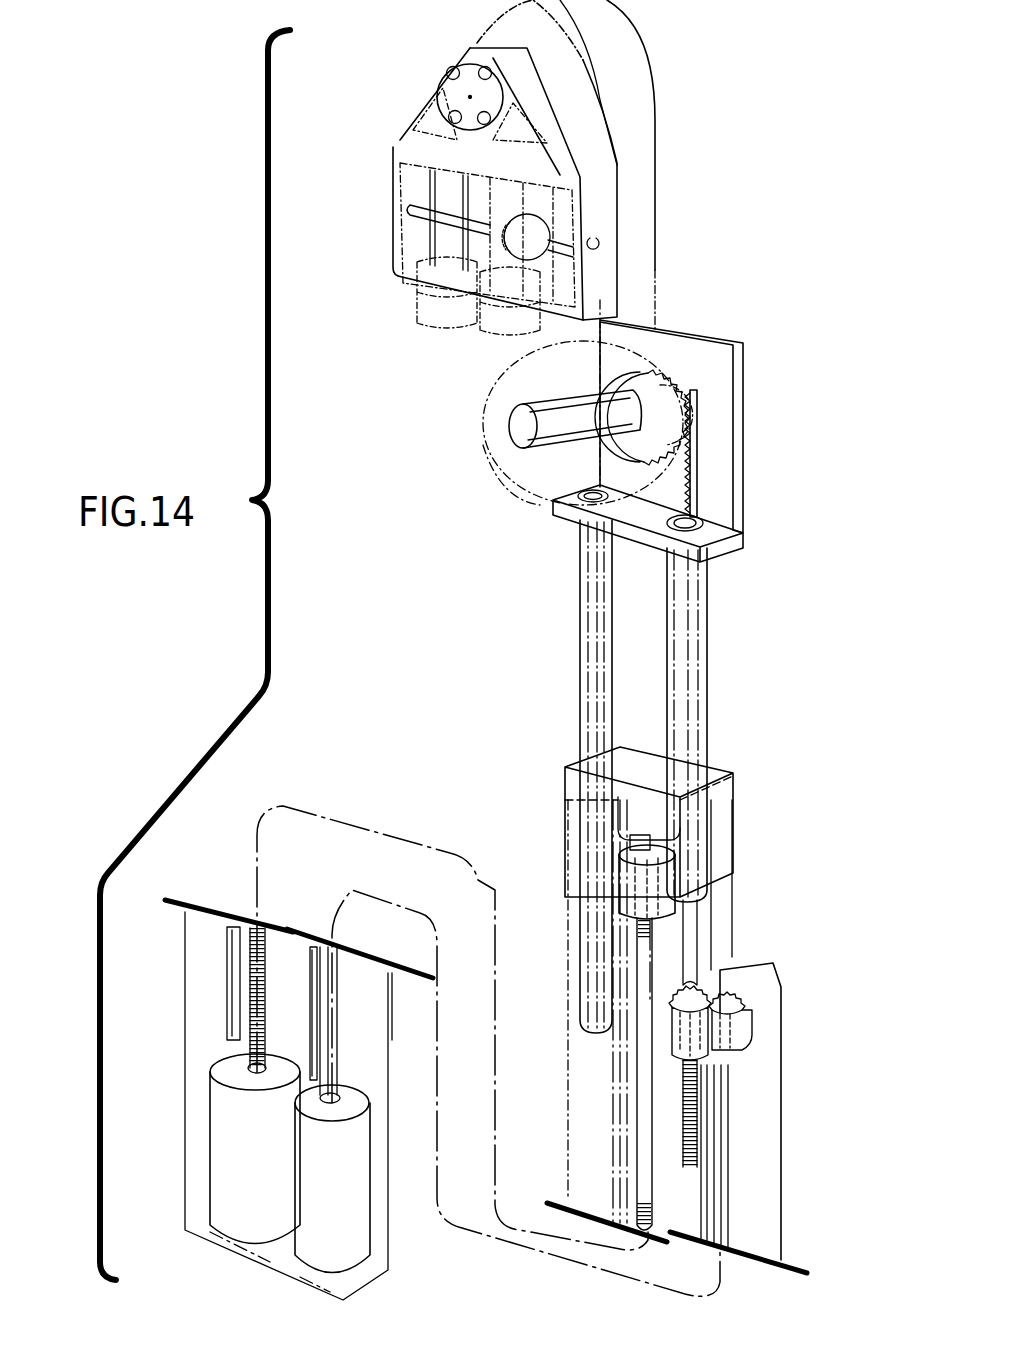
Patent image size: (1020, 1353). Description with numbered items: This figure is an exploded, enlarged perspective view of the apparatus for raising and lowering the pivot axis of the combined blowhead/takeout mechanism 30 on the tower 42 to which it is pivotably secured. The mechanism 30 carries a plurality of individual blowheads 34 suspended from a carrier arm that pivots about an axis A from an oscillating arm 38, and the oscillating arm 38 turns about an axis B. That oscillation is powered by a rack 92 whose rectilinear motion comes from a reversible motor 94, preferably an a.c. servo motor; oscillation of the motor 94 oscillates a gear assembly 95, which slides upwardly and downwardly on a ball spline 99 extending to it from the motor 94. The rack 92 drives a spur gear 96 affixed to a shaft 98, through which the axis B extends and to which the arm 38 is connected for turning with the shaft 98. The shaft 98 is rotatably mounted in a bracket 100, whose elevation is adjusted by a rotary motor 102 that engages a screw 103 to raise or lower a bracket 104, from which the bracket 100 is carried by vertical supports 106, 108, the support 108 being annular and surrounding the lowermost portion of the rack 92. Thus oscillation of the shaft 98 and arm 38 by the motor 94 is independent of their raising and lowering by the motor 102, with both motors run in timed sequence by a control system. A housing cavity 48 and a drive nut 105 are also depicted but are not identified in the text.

The pivot axis of carrier arm A is at (438, 90).
The pivot axis of blowhead mechanism B is at (521, 428).
The combined blowhead/takeout mechanism 30 is at (607, 270).
The blowhead 34 is at (455, 318).
The oscillating arm 38 is at (656, 122).
The tower 42 is at (565, 626).
The housing cavity 48 is at (587, 212).
The rack 92 is at (700, 457).
The reversible motor 94 is at (355, 1185).
The gear assembly 95 is at (770, 1017).
The spur gear 96 is at (660, 360).
The shaft 98 is at (540, 480).
The ball spline 99 is at (738, 1149).
The bracket 100 is at (737, 493).
The rotary motor 102 is at (230, 1133).
The screw 103 is at (248, 1010).
The bracket 104 is at (720, 777).
The drive nut 105 is at (620, 883).
The vertical support 106 is at (580, 668).
The vertical support 108 is at (703, 660).